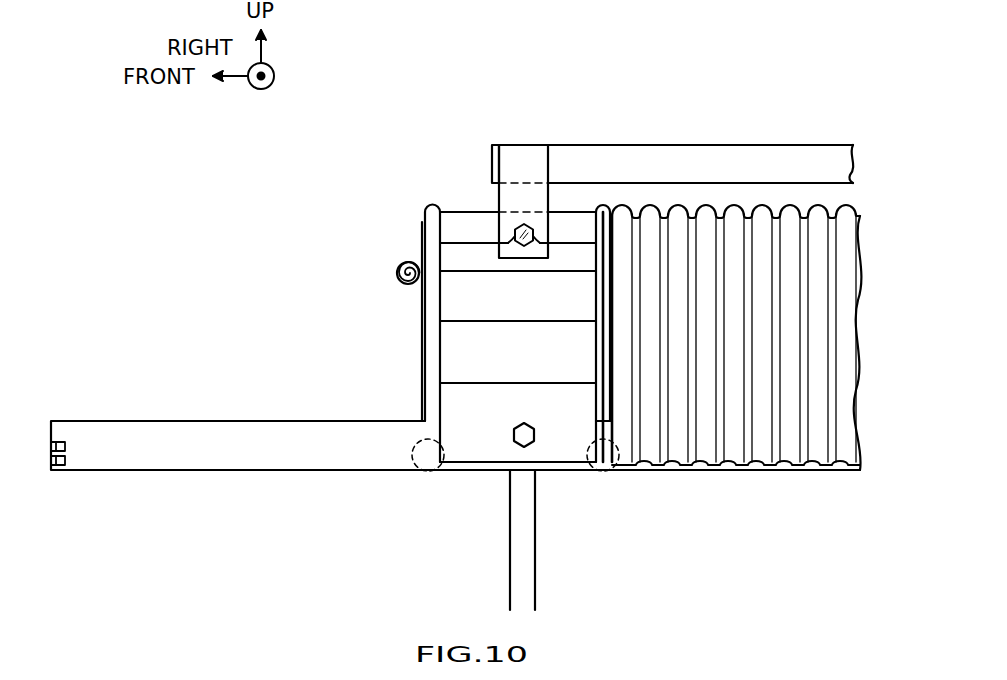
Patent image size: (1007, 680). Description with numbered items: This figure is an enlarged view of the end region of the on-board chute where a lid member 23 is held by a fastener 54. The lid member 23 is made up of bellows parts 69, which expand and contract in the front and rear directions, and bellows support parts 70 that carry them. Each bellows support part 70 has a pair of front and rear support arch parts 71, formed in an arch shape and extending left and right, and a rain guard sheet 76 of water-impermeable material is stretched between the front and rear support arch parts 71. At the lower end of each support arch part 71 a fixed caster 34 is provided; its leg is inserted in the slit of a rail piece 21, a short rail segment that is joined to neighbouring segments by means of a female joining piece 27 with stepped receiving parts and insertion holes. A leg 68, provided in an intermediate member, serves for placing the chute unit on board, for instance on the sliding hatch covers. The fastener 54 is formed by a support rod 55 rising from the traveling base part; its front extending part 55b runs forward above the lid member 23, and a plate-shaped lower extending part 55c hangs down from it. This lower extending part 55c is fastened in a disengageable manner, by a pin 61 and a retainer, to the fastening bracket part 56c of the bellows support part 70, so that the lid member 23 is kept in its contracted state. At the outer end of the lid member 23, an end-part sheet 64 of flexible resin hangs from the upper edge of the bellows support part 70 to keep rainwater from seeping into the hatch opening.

The rail piece 21 is at (187, 421).
The lid member 23 is at (814, 193).
The female joining piece 27 is at (53, 476).
The fixed caster 34 is at (424, 481).
The fastener 54 is at (488, 118).
The support rod 55 is at (656, 135).
The front extending part 55b is at (756, 155).
The lower extending part 55c is at (513, 197).
The fastening bracket part 56c is at (465, 250).
The pin 61 is at (524, 224).
The end-part sheet 64 is at (397, 273).
The leg 68 is at (537, 508).
The bellows part 69 is at (462, 466).
The bellows support part 70 is at (790, 466).
The support arch part 71 is at (602, 206).
The rain guard sheet 76 is at (563, 215).